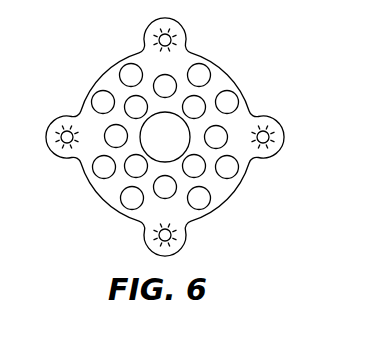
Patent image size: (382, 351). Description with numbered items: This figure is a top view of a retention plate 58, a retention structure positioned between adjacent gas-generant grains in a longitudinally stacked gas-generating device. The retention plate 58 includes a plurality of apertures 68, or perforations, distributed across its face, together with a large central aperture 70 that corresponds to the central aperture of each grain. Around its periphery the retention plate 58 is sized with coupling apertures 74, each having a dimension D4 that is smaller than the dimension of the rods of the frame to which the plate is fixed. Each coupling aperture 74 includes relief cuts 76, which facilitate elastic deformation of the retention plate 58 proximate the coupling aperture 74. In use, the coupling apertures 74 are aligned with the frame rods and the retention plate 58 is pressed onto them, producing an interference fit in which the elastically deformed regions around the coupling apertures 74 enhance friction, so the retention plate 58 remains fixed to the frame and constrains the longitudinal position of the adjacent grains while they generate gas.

The retention plate 58 is at (276, 92).
The apertures 68 is at (136, 106).
The large central aperture 70 is at (170, 130).
The coupling apertures 74 is at (152, 234).
The relief cuts 76 is at (172, 241).
The dimension of coupling aperture D4 is at (234, 137).